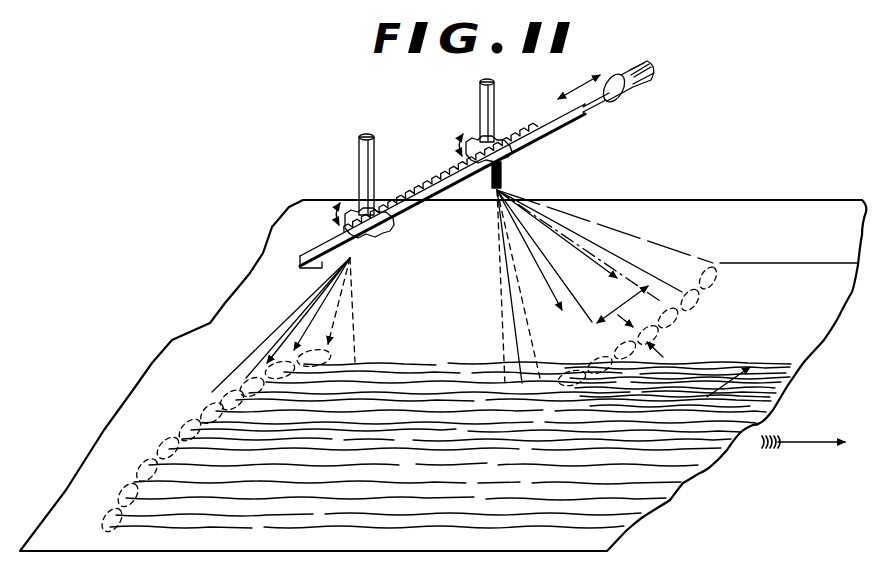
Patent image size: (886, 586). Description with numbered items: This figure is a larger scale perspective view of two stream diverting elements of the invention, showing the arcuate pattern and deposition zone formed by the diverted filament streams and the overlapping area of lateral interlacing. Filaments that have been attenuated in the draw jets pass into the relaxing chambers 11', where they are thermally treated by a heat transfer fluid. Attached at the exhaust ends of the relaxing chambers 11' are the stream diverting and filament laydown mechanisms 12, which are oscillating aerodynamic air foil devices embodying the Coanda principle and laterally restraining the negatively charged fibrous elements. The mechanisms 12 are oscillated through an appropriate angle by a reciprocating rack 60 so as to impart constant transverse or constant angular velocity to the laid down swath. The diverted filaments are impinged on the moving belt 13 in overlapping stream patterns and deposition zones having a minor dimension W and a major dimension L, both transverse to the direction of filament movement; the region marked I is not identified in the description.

The relaxing chamber 11' is at (426, 148).
The stream diverting and filament laydown mechanism 12 is at (377, 208).
The rack 60 is at (416, 211).
The moving belt 13 is at (222, 361).
The minor dimension W is at (644, 338).
The major dimension L is at (830, 265).
The illuminated region I is at (752, 380).